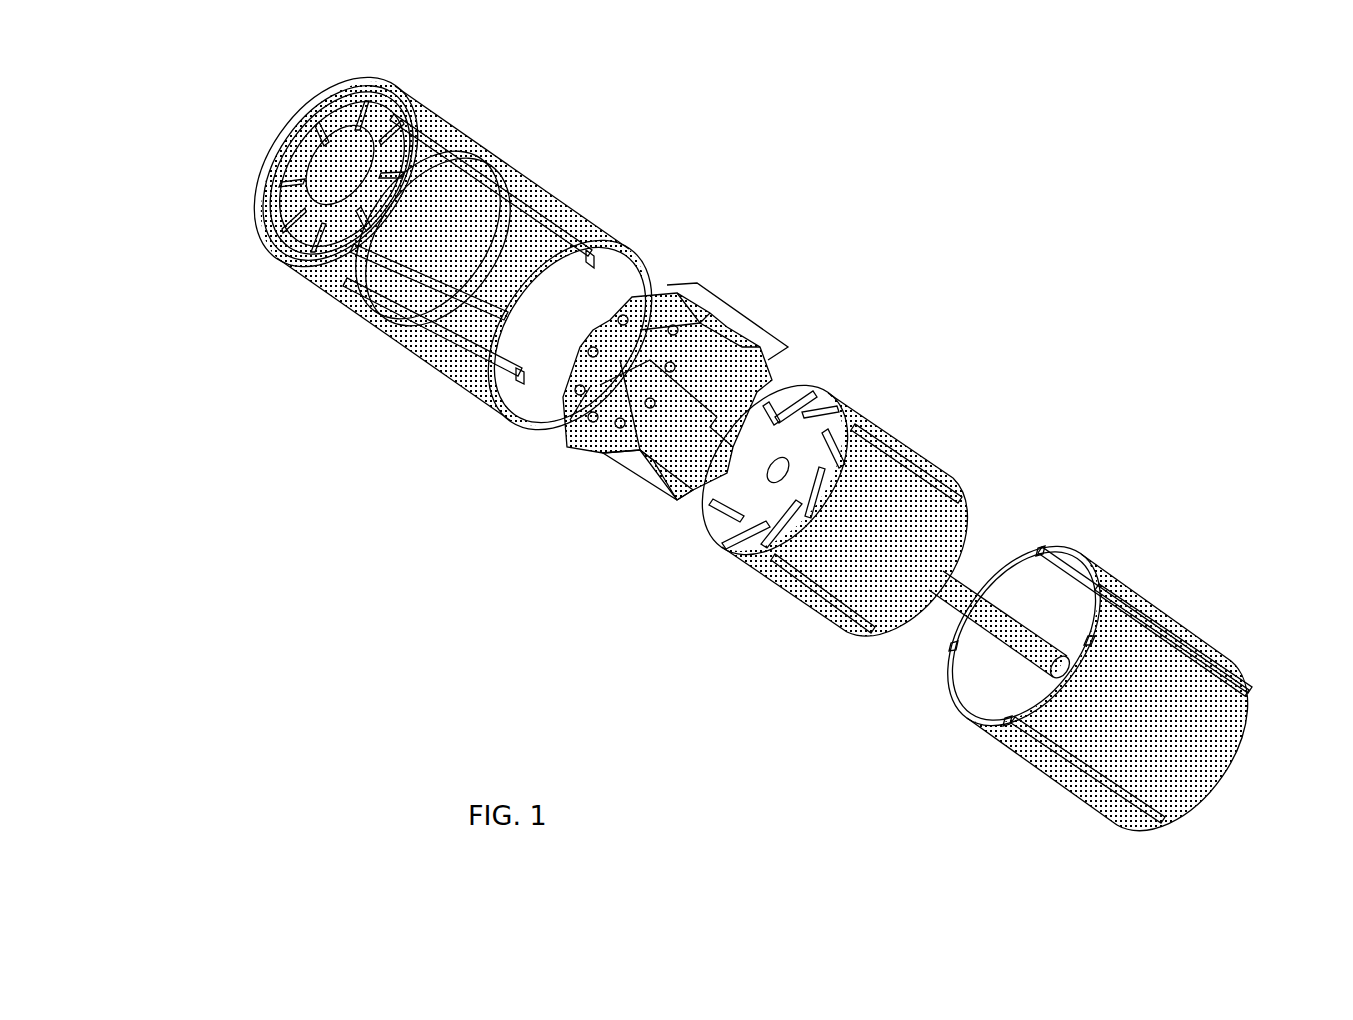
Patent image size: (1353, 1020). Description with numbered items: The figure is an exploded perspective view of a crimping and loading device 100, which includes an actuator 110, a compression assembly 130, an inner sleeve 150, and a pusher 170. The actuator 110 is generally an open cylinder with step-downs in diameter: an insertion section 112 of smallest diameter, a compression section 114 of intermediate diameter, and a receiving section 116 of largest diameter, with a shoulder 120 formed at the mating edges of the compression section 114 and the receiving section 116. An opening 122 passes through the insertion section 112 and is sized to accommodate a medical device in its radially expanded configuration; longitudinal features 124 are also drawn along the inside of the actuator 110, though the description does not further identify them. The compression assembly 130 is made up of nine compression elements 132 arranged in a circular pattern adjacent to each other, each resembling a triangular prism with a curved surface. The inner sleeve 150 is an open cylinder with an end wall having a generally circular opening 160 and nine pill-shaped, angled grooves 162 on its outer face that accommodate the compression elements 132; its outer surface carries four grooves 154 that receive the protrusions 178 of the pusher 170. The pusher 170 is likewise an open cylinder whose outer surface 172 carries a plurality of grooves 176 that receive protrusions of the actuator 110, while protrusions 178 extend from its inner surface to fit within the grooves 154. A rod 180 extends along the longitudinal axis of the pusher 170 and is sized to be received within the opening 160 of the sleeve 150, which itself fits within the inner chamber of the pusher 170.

The crimping and loading device 100 is at (772, 208).
The actuator 110 is at (554, 172).
The insertion section 112 is at (330, 210).
The compression section 114 is at (325, 282).
The receiving section 116 is at (440, 390).
The shoulder 120 is at (352, 322).
The opening 122 is at (297, 167).
The longitudinal rib 124 is at (387, 107).
The compression assembly 130 is at (592, 458).
The compression element 132 is at (657, 447).
The inner sleeve 150 is at (902, 439).
The grooves 154 is at (927, 490).
The opening 160 is at (768, 470).
The grooves 162 is at (798, 403).
The pusher 170 is at (1149, 582).
The outer surface 172 is at (1017, 753).
The grooves 176 is at (1183, 650).
The protrusions 178 is at (963, 677).
The rod 180 is at (963, 587).